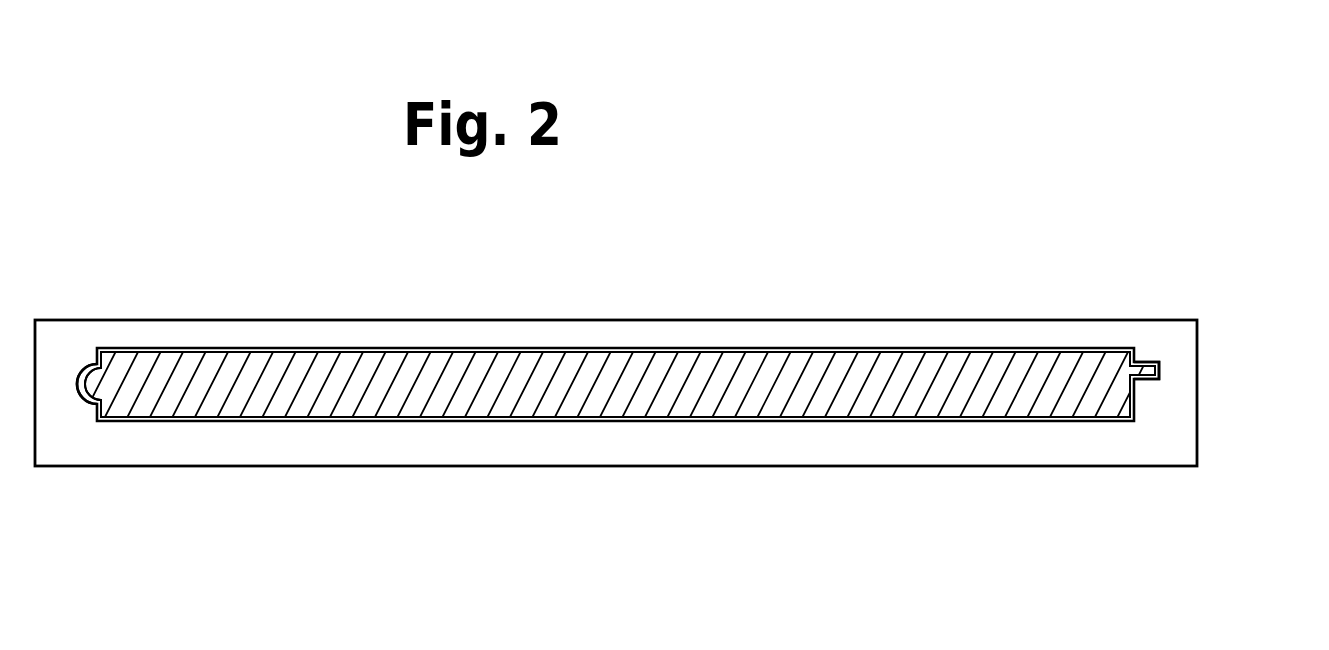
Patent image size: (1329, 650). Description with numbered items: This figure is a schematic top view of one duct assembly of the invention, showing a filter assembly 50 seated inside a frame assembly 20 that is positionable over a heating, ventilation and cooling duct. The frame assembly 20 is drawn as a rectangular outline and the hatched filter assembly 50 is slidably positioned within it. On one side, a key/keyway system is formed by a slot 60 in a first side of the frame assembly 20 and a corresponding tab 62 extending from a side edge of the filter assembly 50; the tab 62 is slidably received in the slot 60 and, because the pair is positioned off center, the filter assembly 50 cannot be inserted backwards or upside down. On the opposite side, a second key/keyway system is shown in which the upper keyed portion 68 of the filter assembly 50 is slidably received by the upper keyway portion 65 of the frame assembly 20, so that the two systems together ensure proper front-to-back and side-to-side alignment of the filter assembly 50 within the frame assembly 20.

The frame assembly 20 is at (922, 445).
The filter assembly 50 is at (615, 363).
The slot 60 is at (1165, 368).
The tab 62 is at (1150, 370).
The upper keyway portion 65 is at (80, 408).
The upper keyed portion 68 is at (95, 385).